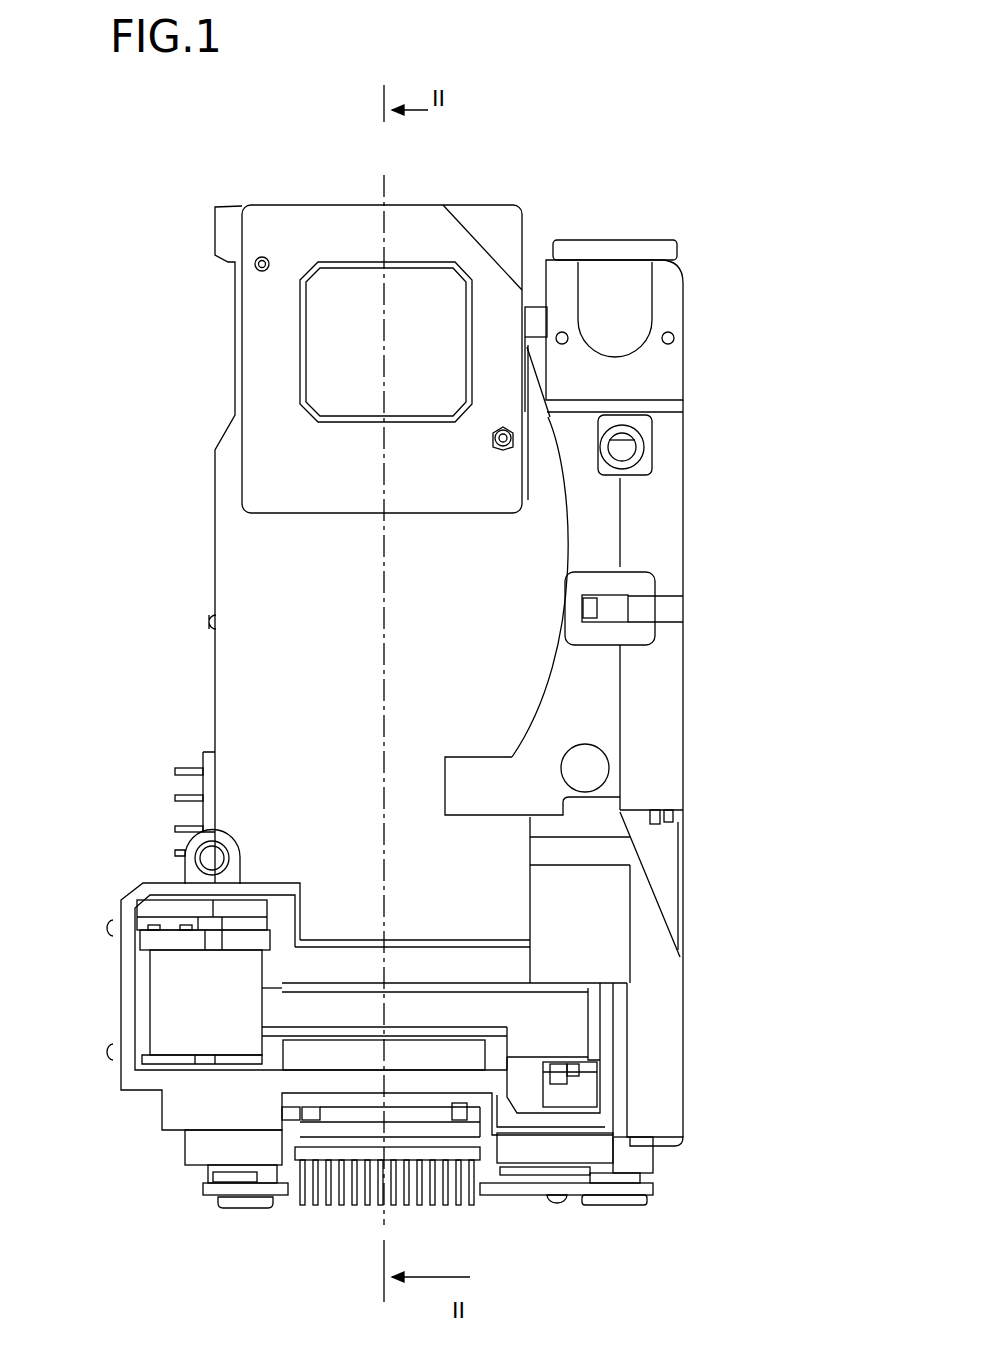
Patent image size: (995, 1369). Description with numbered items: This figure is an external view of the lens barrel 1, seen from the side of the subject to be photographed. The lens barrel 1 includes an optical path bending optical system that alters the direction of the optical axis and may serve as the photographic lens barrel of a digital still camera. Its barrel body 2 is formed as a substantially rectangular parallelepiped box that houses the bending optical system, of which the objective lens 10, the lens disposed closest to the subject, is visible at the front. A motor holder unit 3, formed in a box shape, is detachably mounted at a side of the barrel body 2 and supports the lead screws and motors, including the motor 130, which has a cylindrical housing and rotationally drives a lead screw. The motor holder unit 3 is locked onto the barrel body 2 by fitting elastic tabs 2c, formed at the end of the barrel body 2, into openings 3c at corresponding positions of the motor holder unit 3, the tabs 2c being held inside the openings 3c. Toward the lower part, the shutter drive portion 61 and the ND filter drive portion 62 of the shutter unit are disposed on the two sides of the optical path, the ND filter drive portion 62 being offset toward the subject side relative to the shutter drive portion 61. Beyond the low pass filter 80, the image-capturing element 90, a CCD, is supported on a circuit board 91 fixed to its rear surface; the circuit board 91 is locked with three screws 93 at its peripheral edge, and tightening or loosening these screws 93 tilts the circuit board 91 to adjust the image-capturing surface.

The lens barrel 1 is at (140, 281).
The barrel body 2 is at (327, 613).
The elastic tabs 2c is at (599, 600).
The motor holder unit 3 is at (655, 548).
The openings 3c is at (612, 619).
The objective lens 10 is at (437, 290).
The shutter drive portion 61 is at (548, 1033).
The ND filter drive portion 62 is at (223, 1000).
The low pass filter 80 is at (458, 1118).
The image-capturing element 90 is at (442, 1152).
The circuit board 91 is at (655, 1187).
The screws 93 is at (251, 1205).
The motor 130 is at (615, 285).